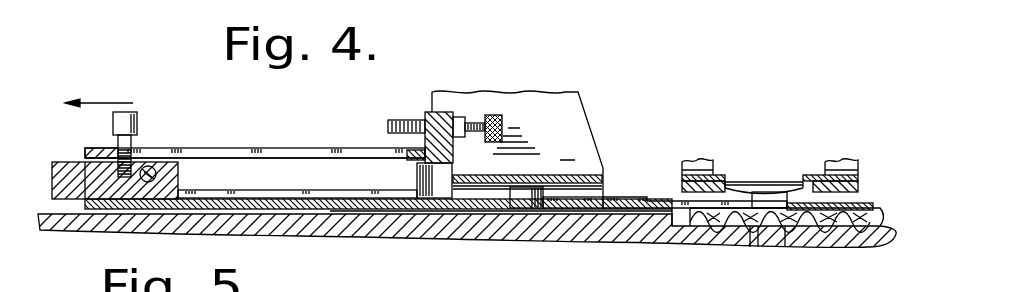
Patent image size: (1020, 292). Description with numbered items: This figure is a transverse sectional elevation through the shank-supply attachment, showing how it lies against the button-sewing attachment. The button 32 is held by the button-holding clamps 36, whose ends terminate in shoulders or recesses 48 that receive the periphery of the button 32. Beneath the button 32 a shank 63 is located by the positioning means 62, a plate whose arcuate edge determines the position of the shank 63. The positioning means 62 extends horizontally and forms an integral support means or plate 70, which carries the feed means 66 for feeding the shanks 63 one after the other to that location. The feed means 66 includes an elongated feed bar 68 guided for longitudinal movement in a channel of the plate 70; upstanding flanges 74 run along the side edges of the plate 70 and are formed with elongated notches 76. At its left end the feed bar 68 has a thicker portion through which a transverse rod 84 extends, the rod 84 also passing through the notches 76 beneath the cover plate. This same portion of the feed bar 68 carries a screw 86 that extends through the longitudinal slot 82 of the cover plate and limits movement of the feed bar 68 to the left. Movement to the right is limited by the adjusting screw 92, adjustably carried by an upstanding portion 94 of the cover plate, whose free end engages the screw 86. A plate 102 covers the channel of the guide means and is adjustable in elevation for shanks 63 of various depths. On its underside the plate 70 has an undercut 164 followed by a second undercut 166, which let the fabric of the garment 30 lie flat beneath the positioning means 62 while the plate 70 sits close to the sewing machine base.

The garment fabric 30 is at (807, 217).
The button 32 is at (766, 182).
The button-holding clamps 36 is at (682, 187).
The shoulders or recesses 48 is at (699, 170).
The positioning means 62 is at (860, 207).
The shank 63 is at (525, 198).
The feed means 66 is at (215, 147).
The feed bar 68 is at (298, 200).
The support means plate 70 is at (332, 210).
The upstanding flanges 74 is at (82, 178).
The elongated notches 76 is at (232, 174).
The longitudinal slot 82 is at (307, 147).
The transverse rod 84 is at (152, 164).
The screw 86 is at (140, 111).
The adjusting screw 92 is at (473, 122).
The upstanding portion 94 is at (425, 112).
The plate 102 is at (572, 176).
The undercut 164 is at (680, 216).
The second undercut 166 is at (568, 214).